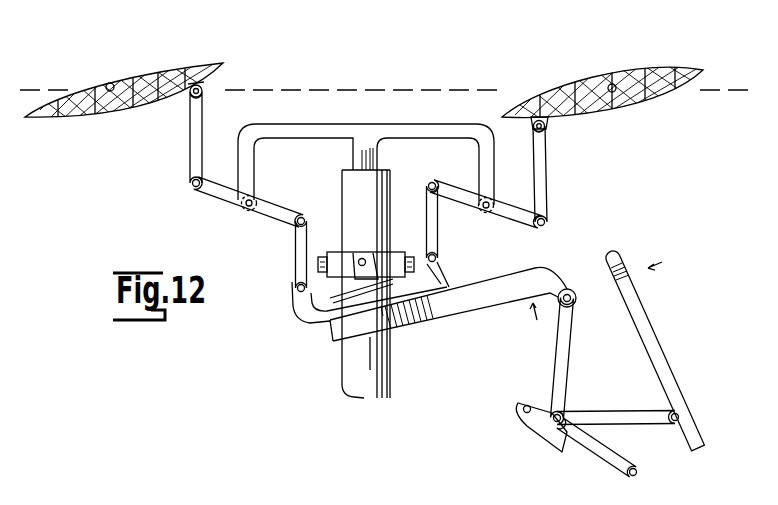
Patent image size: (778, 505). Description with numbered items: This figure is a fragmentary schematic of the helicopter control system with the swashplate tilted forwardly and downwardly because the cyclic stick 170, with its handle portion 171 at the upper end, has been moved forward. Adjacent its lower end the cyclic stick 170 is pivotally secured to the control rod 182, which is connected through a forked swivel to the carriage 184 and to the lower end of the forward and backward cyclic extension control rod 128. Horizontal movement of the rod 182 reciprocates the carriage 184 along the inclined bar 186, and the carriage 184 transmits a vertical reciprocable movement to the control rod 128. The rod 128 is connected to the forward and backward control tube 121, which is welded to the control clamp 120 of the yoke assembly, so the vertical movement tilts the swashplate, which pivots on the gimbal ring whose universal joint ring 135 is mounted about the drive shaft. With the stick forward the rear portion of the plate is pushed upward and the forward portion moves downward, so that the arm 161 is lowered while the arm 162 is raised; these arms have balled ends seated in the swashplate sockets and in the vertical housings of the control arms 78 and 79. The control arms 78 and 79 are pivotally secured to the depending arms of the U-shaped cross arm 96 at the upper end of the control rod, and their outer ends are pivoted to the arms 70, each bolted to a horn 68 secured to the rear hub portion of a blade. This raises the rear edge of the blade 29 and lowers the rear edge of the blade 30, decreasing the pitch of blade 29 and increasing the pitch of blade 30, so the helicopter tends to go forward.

The blade 29 is at (115, 70).
The blade 30 is at (594, 77).
The horn 68 is at (207, 87).
The arm 70 is at (190, 137).
The control arm 78 is at (263, 219).
The control arm 79 is at (500, 217).
The U-shaped cross arm 96 is at (352, 125).
The control clamp 120 is at (340, 332).
The forward and backward control tube 121 is at (486, 282).
The forward and backward cyclic extension control rod 128 is at (571, 327).
The universal joint ring 135 is at (390, 258).
The arm 161 is at (296, 264).
The arm 162 is at (430, 231).
The cyclic stick 170 is at (660, 340).
The handle portion 171 is at (625, 258).
The control rod 182 is at (640, 425).
The carriage 184 is at (545, 432).
The inclined bar 186 is at (590, 448).